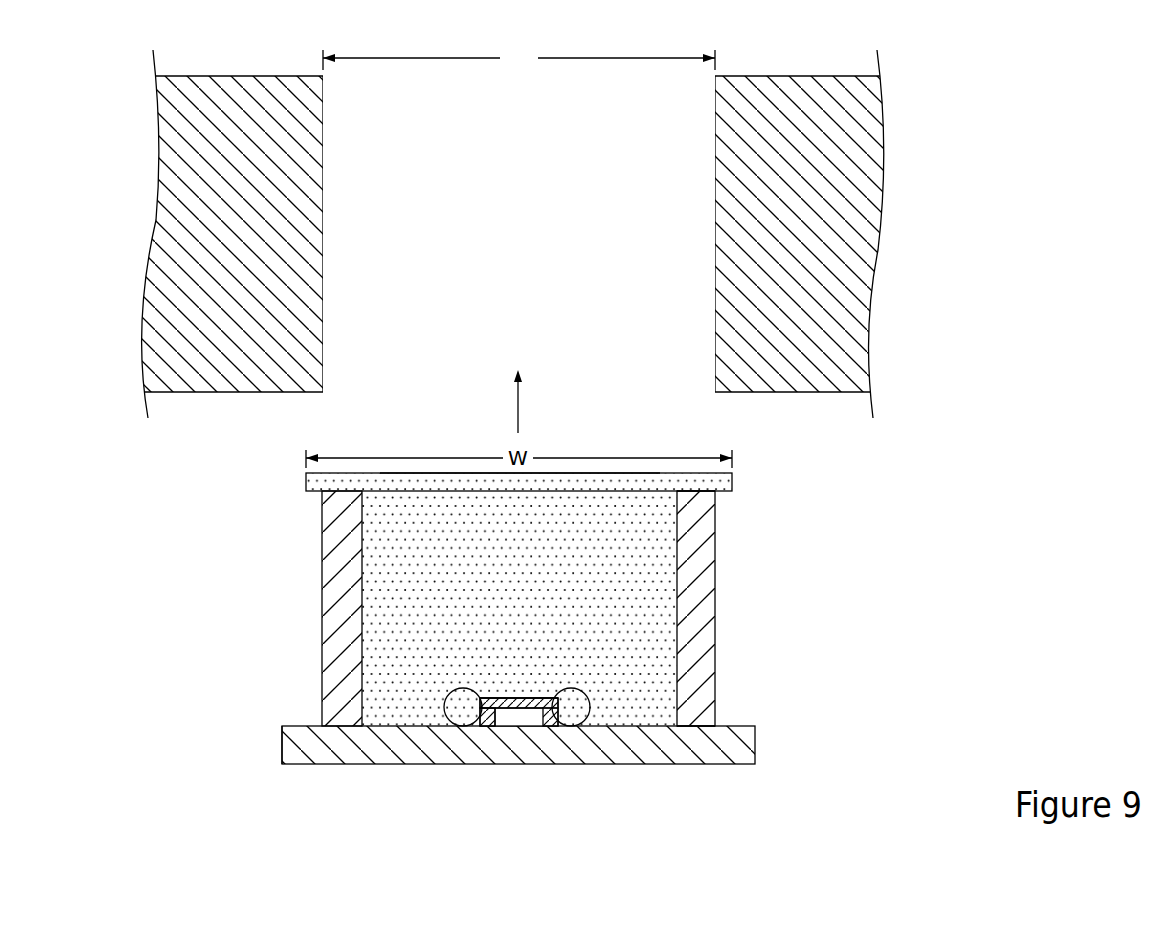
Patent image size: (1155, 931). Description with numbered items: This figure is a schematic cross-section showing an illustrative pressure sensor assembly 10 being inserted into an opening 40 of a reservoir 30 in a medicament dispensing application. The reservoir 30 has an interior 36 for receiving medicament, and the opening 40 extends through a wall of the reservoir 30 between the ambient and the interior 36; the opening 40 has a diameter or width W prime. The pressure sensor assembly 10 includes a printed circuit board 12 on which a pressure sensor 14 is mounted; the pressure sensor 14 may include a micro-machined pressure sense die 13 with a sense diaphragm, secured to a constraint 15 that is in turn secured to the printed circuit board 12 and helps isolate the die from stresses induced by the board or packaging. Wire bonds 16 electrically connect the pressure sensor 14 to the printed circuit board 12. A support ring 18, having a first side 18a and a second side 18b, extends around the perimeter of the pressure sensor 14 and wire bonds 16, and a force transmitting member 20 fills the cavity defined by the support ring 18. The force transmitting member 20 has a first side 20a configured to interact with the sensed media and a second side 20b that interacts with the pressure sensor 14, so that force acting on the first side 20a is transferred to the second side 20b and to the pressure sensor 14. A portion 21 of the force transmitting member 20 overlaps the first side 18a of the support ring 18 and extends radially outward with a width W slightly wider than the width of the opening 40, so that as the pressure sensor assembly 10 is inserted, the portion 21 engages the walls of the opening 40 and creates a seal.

The pressure sensor assembly 10 is at (254, 718).
The printed circuit board 12 is at (660, 758).
The pressure sense die 13 is at (490, 697).
The pressure sensor 14 is at (556, 738).
The constraint 15 is at (473, 717).
The wire bonds 16 is at (457, 692).
The support ring 18 is at (698, 641).
The first side of the support ring 18a is at (695, 478).
The second side of the support ring 18b is at (702, 738).
The force transmitting member 20 is at (662, 569).
The first side of the force transmitting member 20a is at (607, 472).
The second side of the force transmitting member 20b is at (515, 713).
The portion of the force transmitting member 21 is at (732, 481).
The reservoir 30 is at (850, 217).
The interior 36 is at (443, 35).
The opening 40 is at (639, 78).